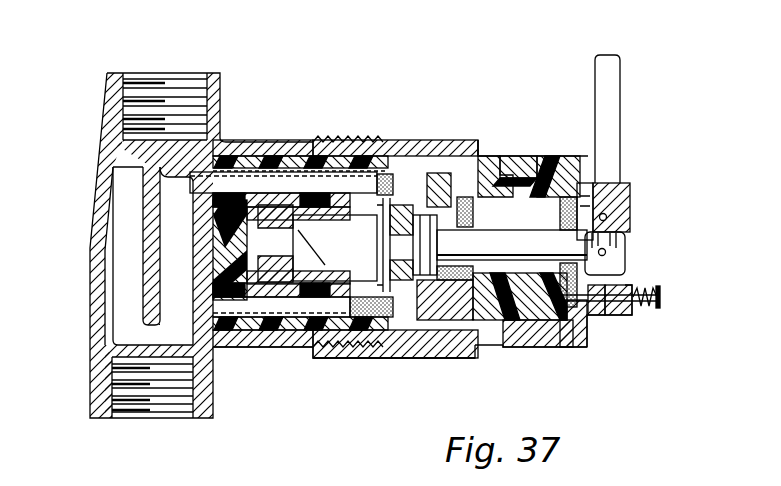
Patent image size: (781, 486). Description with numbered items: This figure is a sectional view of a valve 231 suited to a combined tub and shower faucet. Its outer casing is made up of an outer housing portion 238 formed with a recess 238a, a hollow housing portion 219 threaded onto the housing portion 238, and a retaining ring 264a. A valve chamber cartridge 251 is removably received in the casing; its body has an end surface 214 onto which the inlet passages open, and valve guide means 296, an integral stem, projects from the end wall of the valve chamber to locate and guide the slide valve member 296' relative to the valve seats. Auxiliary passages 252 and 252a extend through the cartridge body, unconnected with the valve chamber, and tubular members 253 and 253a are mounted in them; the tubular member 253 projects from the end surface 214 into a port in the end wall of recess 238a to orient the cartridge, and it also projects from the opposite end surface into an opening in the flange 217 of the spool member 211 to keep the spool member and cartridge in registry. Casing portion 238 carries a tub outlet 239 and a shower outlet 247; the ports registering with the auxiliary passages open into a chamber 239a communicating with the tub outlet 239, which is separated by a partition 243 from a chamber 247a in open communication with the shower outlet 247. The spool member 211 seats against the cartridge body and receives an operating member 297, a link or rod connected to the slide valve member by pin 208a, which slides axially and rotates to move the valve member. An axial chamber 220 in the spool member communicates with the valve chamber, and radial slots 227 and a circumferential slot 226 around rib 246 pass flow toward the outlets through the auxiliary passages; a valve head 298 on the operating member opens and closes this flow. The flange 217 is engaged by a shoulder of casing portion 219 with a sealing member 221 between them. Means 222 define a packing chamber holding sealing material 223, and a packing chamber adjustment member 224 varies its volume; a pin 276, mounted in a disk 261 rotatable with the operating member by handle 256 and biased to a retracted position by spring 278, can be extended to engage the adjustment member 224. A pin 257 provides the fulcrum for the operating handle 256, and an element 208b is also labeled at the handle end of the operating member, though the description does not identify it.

The shower outlet 247 is at (140, 82).
The partition 243 is at (104, 241).
The chamber 247a is at (118, 283).
The end surface 214 is at (198, 272).
The tub outlet 239 is at (115, 418).
The chamber 239a is at (178, 333).
The auxiliary passage 252 is at (333, 184).
The flange 217 is at (368, 160).
The outer housing portion 238 is at (244, 144).
The recess 238a is at (237, 154).
The tubular member 253 is at (201, 197).
The valve guide means 296 is at (281, 206).
The valve chamber cartridge 251 is at (237, 310).
The tubular member 253a is at (378, 270).
The pin 208a is at (386, 223).
The auxiliary passage 252a is at (283, 311).
The axial chamber 220 is at (334, 348).
The sealing member 221 is at (354, 338).
The hollow housing portion 219 is at (379, 358).
The slide valve member 296' is at (420, 198).
The valve head 298 is at (431, 237).
The sealing material 223 is at (490, 236).
The rib 246 is at (471, 166).
The circumferential slot 226 is at (491, 178).
The packing chamber adjustment member 224 is at (538, 200).
The packing chamber means 222 is at (498, 321).
The radial slots 227 is at (467, 304).
The spool member 211 is at (533, 333).
The retaining ring 264a is at (568, 344).
The operating handle 256 is at (614, 68).
The pin 257 is at (604, 217).
The link 208b is at (604, 252).
The operating member 297 is at (607, 303).
The pin 276 is at (620, 314).
The disk 261 is at (629, 315).
The spring 278 is at (646, 292).
The valve 231 is at (672, 132).